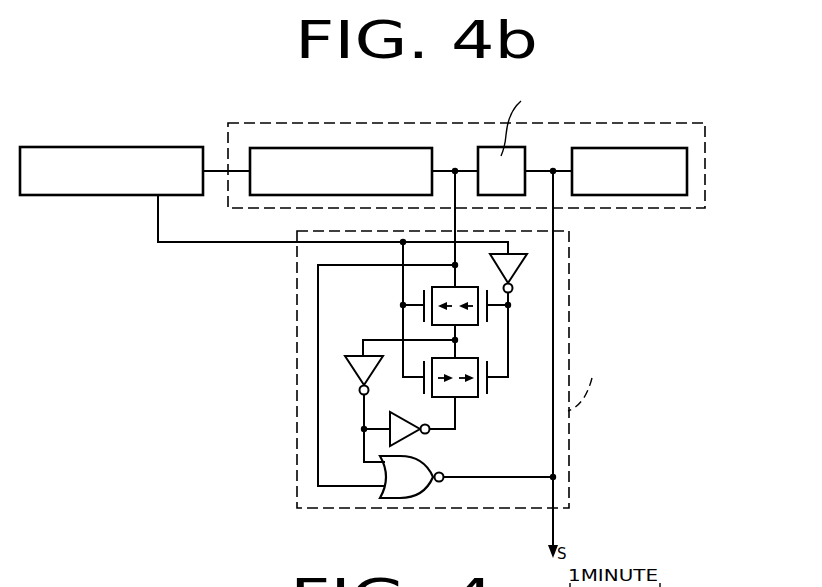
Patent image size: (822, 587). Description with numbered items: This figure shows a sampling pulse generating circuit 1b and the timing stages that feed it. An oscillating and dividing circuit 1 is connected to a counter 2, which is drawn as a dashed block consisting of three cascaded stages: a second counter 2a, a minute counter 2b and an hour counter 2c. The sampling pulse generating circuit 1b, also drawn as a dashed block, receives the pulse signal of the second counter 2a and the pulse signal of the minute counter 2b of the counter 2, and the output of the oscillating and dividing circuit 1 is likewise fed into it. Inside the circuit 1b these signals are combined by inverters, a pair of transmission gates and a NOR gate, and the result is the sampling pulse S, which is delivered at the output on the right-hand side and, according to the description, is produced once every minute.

The oscillating and dividing circuit 1 is at (124, 146).
The counter 2 is at (455, 124).
The second counter 2a is at (359, 145).
The minute counter 2b is at (519, 148).
The hour counter 2c is at (647, 145).
The sampling pulse generating circuit 1b is at (569, 288).